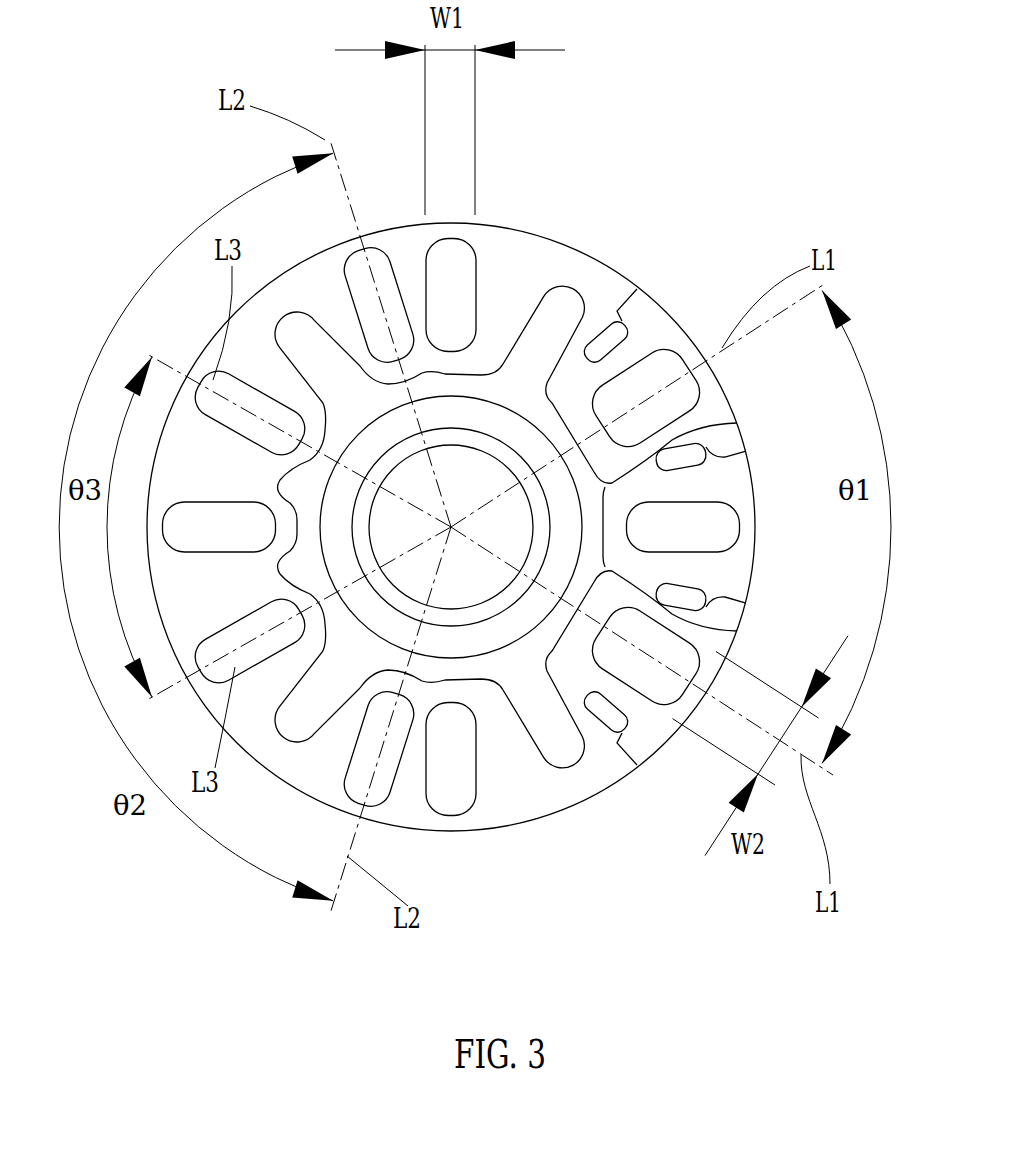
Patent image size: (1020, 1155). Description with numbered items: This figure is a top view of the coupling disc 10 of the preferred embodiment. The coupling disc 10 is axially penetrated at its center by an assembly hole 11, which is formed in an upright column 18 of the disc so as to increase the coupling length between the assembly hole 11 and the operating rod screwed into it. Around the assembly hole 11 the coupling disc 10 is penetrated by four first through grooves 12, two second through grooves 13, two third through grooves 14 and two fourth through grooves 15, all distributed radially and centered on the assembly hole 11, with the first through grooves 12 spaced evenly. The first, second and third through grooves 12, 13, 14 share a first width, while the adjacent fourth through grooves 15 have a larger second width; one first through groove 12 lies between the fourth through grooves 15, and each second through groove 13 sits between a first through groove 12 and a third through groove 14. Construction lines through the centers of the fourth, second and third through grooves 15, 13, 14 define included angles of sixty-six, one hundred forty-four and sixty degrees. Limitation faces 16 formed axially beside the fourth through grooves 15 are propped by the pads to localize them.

The coupling disc 10 is at (618, 272).
The assembly hole 11 is at (486, 446).
The first through grooves 12 is at (476, 250).
The second through grooves 13 is at (370, 252).
The third through grooves 14 is at (253, 383).
The fourth through grooves 15 is at (720, 337).
The limitation faces 16 is at (590, 367).
The upright column 18 is at (535, 625).